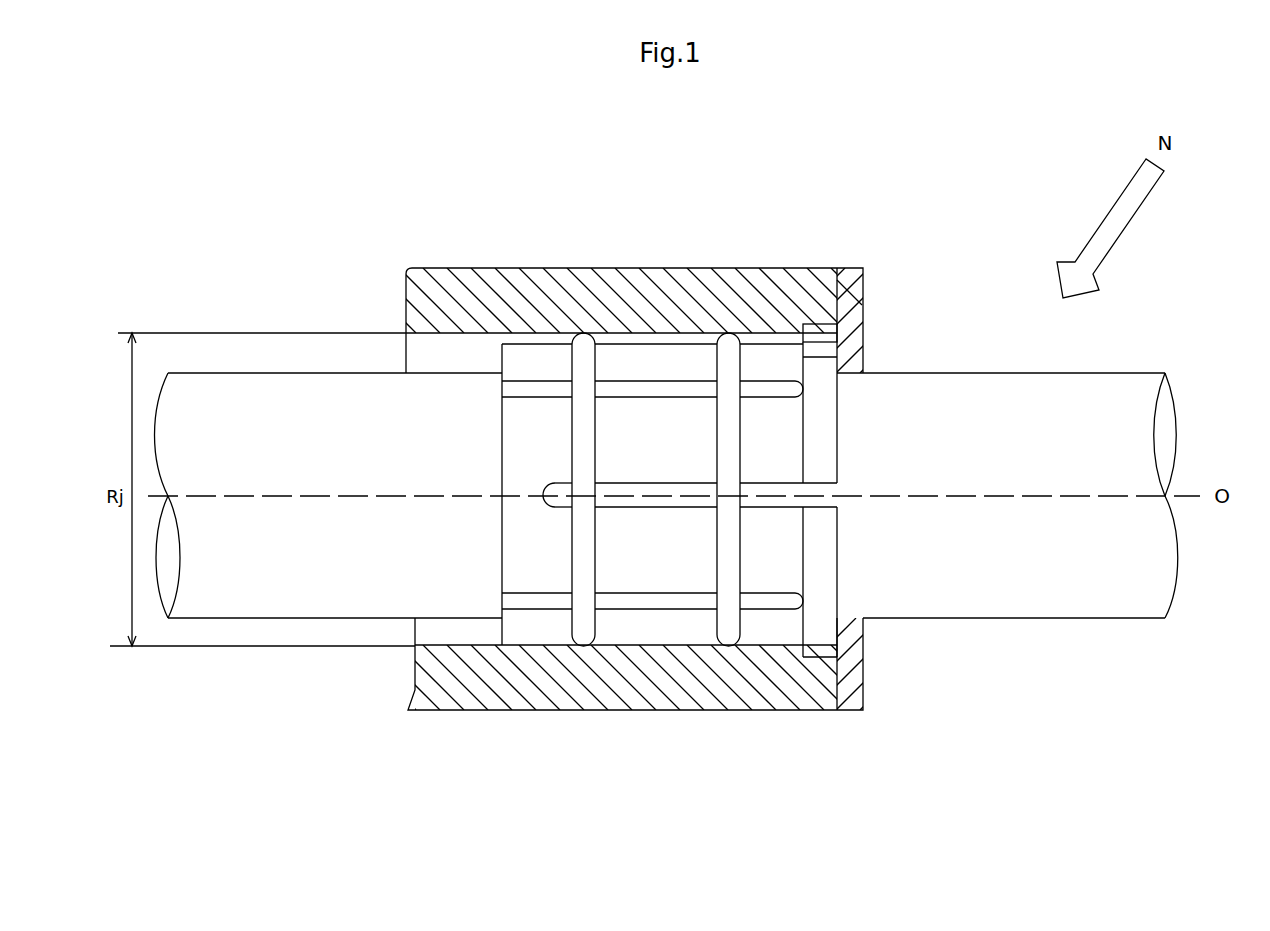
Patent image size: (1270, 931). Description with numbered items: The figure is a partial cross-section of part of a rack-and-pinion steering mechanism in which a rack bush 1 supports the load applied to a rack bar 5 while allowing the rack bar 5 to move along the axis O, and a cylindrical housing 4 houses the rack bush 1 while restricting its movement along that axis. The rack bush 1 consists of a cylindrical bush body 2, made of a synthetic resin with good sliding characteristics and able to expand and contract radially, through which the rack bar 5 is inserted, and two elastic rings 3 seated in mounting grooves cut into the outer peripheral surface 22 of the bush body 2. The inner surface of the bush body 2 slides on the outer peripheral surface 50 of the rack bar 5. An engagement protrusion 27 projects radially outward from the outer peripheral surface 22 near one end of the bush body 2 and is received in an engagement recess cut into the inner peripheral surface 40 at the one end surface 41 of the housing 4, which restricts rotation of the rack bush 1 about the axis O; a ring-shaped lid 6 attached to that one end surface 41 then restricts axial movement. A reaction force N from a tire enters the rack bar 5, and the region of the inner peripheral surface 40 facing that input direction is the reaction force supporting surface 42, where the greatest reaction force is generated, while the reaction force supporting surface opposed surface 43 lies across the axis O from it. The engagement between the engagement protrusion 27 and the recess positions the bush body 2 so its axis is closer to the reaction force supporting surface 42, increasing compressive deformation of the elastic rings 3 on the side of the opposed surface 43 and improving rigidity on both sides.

The rack bush 1 is at (842, 371).
The bush body 2 is at (527, 344).
The elastic rings 3 is at (584, 333).
The housing 4 is at (652, 268).
The rack bar 5 is at (1094, 373).
The ring-shaped lid 6 is at (850, 268).
The outer peripheral surface 22 is at (667, 617).
The engagement protrusion 27 is at (820, 336).
The inner peripheral surface 40 is at (443, 333).
The one end surface 41 is at (840, 293).
The reaction force supporting surface 42 is at (448, 645).
The reaction force supporting surface opposed surface 43 is at (477, 333).
The outer peripheral surface 50 is at (938, 395).